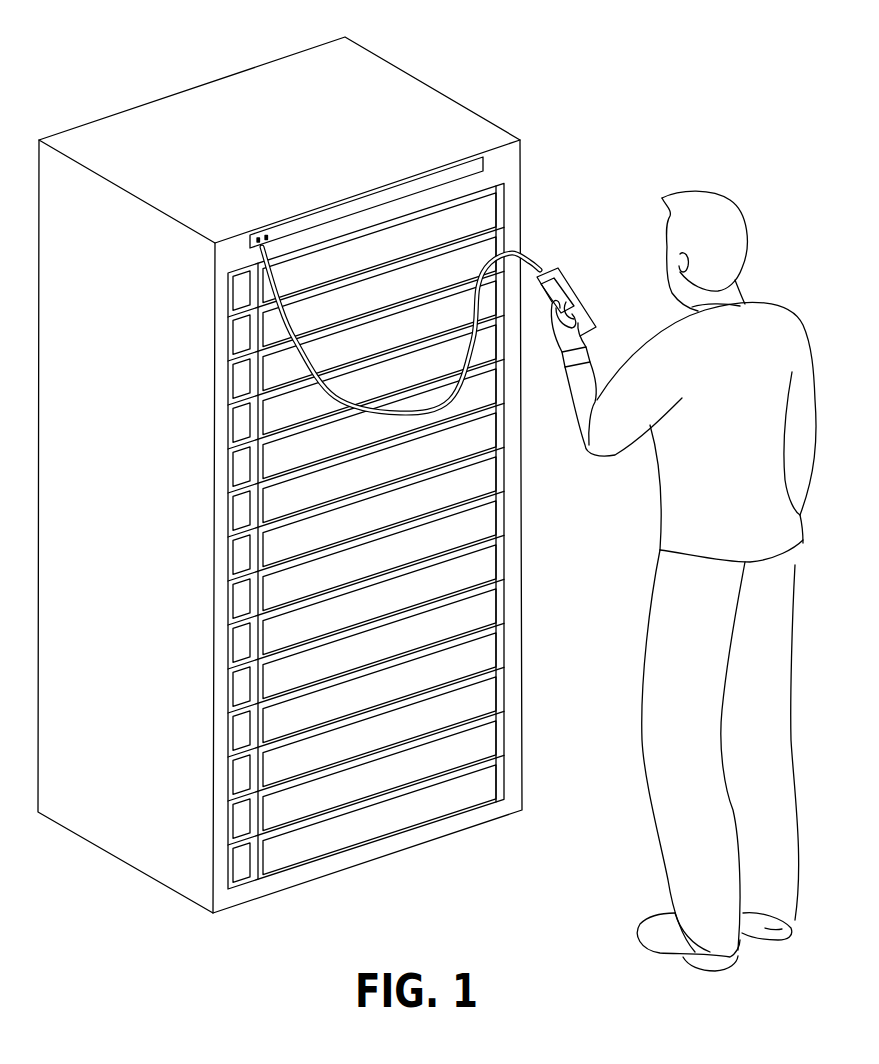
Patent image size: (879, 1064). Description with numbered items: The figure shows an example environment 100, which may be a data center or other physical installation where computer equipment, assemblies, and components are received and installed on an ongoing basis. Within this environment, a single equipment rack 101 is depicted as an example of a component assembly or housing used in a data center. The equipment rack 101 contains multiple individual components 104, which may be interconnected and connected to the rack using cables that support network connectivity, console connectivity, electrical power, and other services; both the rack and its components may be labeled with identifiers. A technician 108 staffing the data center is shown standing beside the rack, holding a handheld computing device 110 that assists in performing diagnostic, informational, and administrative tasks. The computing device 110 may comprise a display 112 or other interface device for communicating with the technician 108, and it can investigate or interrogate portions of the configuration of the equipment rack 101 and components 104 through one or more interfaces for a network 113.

The example environment 100 is at (709, 75).
The equipment rack 101 is at (463, 103).
The components 104 is at (508, 790).
The technician 108 is at (660, 543).
The computing device 110 is at (596, 331).
The display 112 is at (557, 263).
The network 113 is at (287, 222).